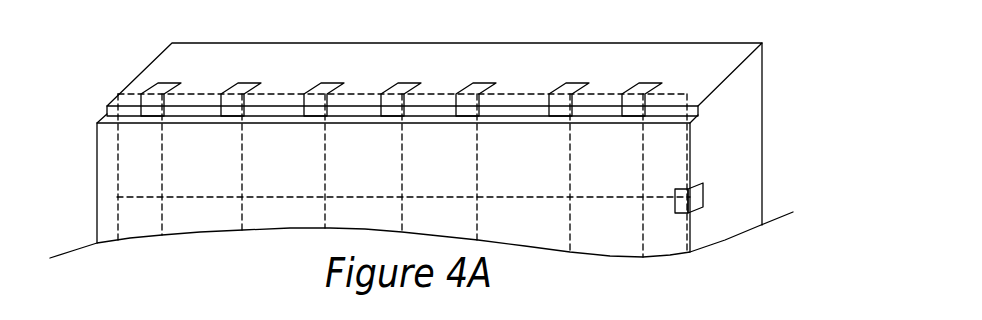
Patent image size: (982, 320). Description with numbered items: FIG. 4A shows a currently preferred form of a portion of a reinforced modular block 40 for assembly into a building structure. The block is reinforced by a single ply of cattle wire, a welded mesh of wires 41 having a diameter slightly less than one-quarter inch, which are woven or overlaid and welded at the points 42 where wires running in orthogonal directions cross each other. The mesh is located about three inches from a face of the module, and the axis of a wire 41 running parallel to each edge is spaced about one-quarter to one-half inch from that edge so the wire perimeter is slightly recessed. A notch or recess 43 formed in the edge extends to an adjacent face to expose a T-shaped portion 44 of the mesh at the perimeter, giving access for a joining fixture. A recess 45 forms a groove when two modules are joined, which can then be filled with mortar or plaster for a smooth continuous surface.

The battery module assembly 40 is at (812, 147).
The wires 41 is at (675, 95).
The points 42 is at (573, 198).
The notch or recess 43 is at (625, 102).
The T-shaped portion 44 is at (562, 89).
The recess 45 is at (104, 107).